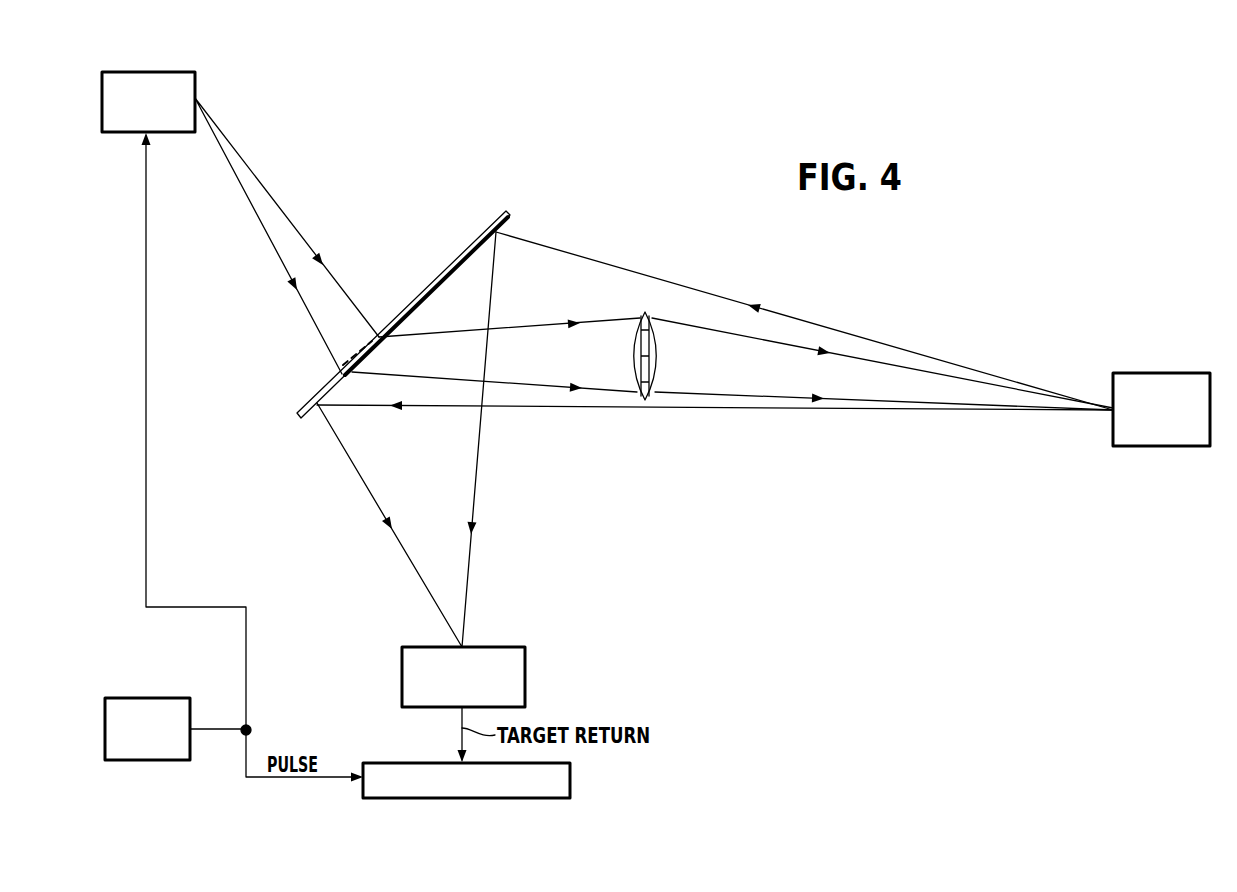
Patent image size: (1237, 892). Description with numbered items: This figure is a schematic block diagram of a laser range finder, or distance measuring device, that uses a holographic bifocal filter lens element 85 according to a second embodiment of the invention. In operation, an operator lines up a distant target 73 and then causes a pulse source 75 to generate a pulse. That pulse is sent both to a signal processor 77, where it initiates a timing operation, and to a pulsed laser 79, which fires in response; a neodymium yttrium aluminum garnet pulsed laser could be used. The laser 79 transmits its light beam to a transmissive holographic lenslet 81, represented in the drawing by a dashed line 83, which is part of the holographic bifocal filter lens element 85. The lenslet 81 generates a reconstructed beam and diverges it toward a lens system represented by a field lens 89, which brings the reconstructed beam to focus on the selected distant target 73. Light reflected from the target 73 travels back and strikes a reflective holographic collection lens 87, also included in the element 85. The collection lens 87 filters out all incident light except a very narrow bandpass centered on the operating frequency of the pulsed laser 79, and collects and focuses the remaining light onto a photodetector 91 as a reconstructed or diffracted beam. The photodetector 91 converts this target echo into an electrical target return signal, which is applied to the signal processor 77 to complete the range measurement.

The distant target 73 is at (1135, 372).
The pulse source 75 is at (140, 698).
The signal processor 77 is at (392, 763).
The pulsed laser 79 is at (122, 133).
The transmissive holographic lenslet 81 is at (287, 236).
The dashed line 83 is at (368, 341).
The holographic bifocal filter lens element 85 is at (403, 314).
The reflective holographic collection lens 87 is at (428, 295).
The field lens 89 is at (660, 358).
The photodetector 91 is at (402, 680).